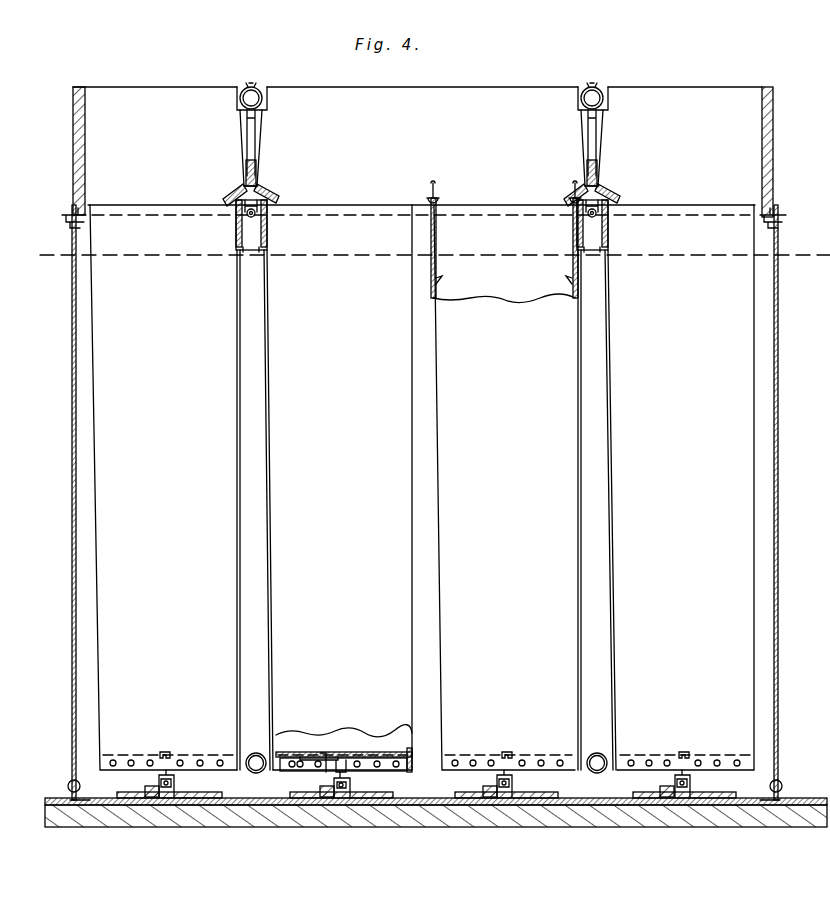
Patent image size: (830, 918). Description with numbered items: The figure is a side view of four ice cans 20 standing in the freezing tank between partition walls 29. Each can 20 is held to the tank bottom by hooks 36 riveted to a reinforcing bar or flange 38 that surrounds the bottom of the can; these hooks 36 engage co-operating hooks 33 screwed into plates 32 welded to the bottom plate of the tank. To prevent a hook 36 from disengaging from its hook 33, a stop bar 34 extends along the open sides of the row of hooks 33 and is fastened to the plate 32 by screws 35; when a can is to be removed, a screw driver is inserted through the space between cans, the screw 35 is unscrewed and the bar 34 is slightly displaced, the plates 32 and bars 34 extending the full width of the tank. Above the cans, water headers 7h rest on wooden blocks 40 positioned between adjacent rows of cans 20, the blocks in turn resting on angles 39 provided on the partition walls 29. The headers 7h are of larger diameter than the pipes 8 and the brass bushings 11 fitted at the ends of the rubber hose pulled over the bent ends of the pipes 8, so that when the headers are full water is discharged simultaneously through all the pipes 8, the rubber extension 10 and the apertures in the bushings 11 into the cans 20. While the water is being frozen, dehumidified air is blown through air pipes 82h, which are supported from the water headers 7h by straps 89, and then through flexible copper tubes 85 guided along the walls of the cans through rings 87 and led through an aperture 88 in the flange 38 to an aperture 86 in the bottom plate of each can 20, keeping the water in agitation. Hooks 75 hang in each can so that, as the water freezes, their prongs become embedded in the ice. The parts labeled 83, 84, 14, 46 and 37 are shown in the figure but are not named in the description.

The wooden block 40 is at (121, 86).
The partition wall 29 is at (72, 518).
The angle 39 is at (70, 226).
The can 20 is at (422, 487).
The flexible copper tube 85 is at (268, 458).
The water header 7h is at (250, 95).
The pipe 8 is at (254, 141).
The strap 89 is at (261, 153).
The rubber extension 10 is at (237, 186).
The brass bushing 11 is at (222, 193).
The air pipe 82h is at (268, 209).
The clamp jaw 83 is at (236, 234).
The clamp jaw 84 is at (268, 234).
The pin 14 is at (250, 218).
The ring 87 is at (242, 278).
The hook 75 is at (438, 234).
The pipe 46 is at (255, 752).
The aperture 88 is at (296, 752).
The reinforcing bar or flange 38 is at (412, 760).
The bottom box 37 is at (392, 767).
The aperture 86 is at (340, 762).
The hook 36 is at (352, 785).
The hook 33 is at (176, 785).
The screw 35 is at (146, 789).
The bar 34 is at (318, 788).
The plate 32 is at (205, 796).